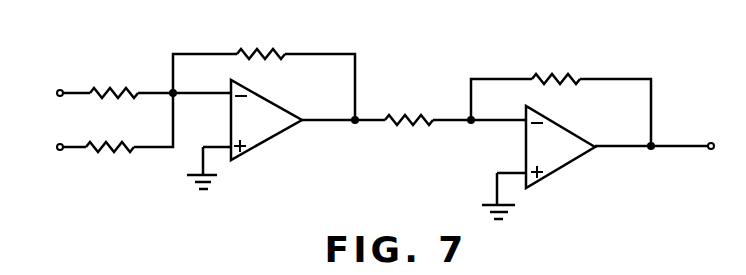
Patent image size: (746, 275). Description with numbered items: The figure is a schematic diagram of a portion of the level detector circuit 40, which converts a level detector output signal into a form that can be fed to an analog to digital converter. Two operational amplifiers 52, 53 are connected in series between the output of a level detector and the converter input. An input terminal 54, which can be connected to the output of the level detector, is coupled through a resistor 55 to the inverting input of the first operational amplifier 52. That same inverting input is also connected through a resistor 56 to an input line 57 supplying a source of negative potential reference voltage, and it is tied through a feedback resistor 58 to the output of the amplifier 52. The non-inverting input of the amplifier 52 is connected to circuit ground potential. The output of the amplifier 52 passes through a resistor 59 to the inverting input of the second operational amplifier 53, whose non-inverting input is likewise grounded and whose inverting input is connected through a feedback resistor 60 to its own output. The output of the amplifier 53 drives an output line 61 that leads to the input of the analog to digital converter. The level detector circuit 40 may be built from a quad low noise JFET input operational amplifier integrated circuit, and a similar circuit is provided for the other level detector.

The level detector circuit 40 is at (371, 196).
The operational amplifier 52 is at (257, 147).
The operational amplifier 53 is at (565, 172).
The input terminal 54 is at (72, 92).
The resistor 55 is at (114, 88).
The resistor 56 is at (104, 150).
The input line 57 is at (73, 150).
The feedback resistor 58 is at (263, 48).
The resistor 59 is at (414, 110).
The feedback resistor 60 is at (560, 72).
The output line 61 is at (679, 145).